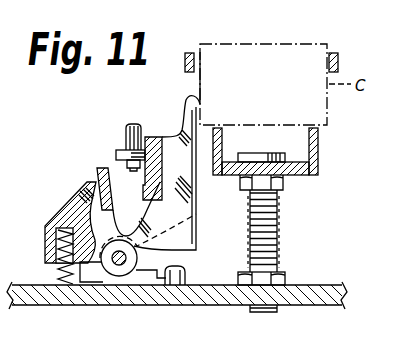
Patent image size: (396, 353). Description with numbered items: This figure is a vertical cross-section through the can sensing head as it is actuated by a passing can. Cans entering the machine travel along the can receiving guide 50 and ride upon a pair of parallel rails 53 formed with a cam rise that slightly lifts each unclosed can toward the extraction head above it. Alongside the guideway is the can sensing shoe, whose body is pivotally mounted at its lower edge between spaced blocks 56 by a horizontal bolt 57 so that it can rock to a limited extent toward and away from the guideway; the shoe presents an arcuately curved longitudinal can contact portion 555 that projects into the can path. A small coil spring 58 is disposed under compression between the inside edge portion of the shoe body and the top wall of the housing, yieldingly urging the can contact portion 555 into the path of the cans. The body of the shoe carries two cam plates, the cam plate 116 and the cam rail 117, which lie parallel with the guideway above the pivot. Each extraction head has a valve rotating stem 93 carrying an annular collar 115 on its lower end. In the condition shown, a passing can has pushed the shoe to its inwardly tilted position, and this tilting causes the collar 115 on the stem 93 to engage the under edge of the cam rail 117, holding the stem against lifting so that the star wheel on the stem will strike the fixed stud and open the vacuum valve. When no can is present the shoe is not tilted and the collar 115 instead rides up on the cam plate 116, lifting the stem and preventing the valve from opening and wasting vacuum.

The can receiving guide 50 is at (189, 52).
The rails 53 is at (243, 128).
The housing (phantom) 555 is at (202, 103).
The blocks 56 is at (150, 334).
The horizontal bolt 57 is at (149, 233).
The coil spring 58 is at (68, 290).
The valve rotating stem 93 is at (130, 124).
The annular collar 115 is at (118, 148).
The cam plate 116 is at (97, 178).
The cam rail 117 is at (153, 136).